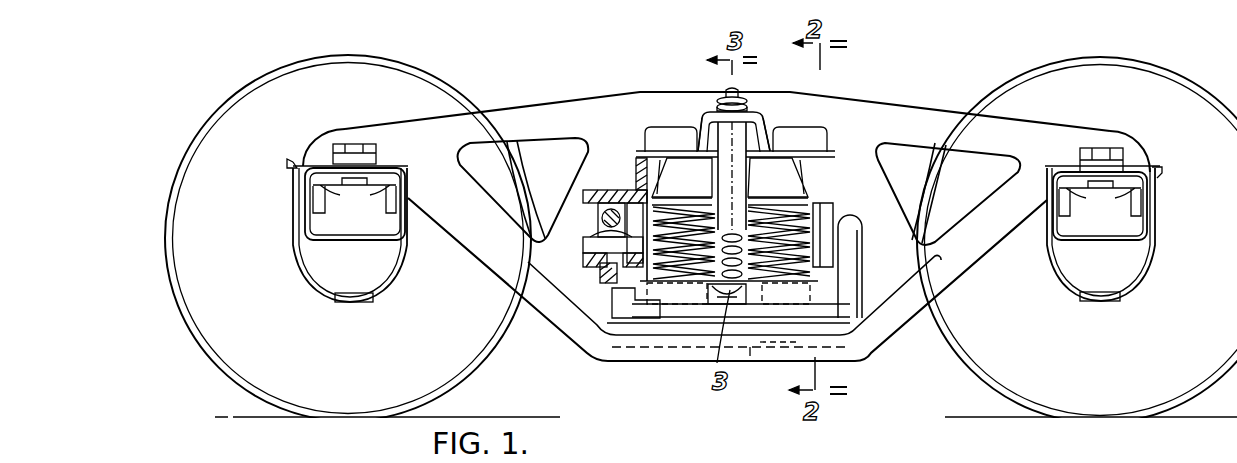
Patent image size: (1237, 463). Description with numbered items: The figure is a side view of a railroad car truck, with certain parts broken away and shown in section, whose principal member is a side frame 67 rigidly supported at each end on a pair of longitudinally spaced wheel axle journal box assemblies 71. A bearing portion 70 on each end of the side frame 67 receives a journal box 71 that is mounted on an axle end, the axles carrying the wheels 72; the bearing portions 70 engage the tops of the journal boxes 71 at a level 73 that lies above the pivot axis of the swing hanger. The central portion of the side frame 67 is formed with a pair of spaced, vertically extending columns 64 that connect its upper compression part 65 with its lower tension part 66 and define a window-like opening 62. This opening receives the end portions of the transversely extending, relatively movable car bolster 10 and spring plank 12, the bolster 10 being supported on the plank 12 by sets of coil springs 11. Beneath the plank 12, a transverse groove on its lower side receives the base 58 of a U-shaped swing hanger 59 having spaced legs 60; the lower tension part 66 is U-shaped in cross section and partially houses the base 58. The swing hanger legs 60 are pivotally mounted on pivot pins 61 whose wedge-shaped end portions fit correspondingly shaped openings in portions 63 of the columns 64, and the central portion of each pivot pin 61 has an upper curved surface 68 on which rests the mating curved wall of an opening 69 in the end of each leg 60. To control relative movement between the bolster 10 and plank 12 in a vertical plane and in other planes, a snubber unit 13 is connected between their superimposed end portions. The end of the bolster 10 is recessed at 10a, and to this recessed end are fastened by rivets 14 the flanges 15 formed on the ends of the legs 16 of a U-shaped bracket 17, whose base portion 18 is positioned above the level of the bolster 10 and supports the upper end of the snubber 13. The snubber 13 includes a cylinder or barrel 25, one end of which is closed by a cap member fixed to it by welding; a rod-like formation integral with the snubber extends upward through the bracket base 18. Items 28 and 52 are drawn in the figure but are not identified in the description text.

The car bolster 10 is at (807, 187).
The recessed end of the bolster 10a is at (767, 147).
The coil springs 11 is at (800, 217).
The spring plank 12 is at (830, 288).
The snubber unit 13 is at (732, 200).
The rivets 14 is at (818, 150).
The flanges 15 is at (647, 150).
The legs 16 is at (700, 128).
The U-shaped bracket 17 is at (704, 110).
The base portion of the bracket 18 is at (773, 117).
The cylinder or barrel 25 is at (712, 180).
The nut 28 is at (746, 99).
The anchor 52 is at (707, 290).
The base of the swing hanger 58 is at (752, 345).
The swing hanger 59 is at (858, 214).
The legs of the swing hanger 60 is at (590, 315).
The pivot pins 61 is at (548, 228).
The window-like opening 62 is at (653, 130).
The portions of the columns 63 is at (632, 192).
The columns 64 is at (587, 158).
The upper compression part 65 is at (622, 95).
The lower tension part 66 is at (633, 354).
The side frame 67 is at (487, 270).
The upper curved surface 68 is at (593, 227).
The opening in the swing hanger leg 69 is at (590, 257).
The bearing portion 70 is at (327, 143).
The journal box 71 is at (315, 228).
The wheels 72 is at (218, 128).
The level of engagement 73 is at (338, 191).